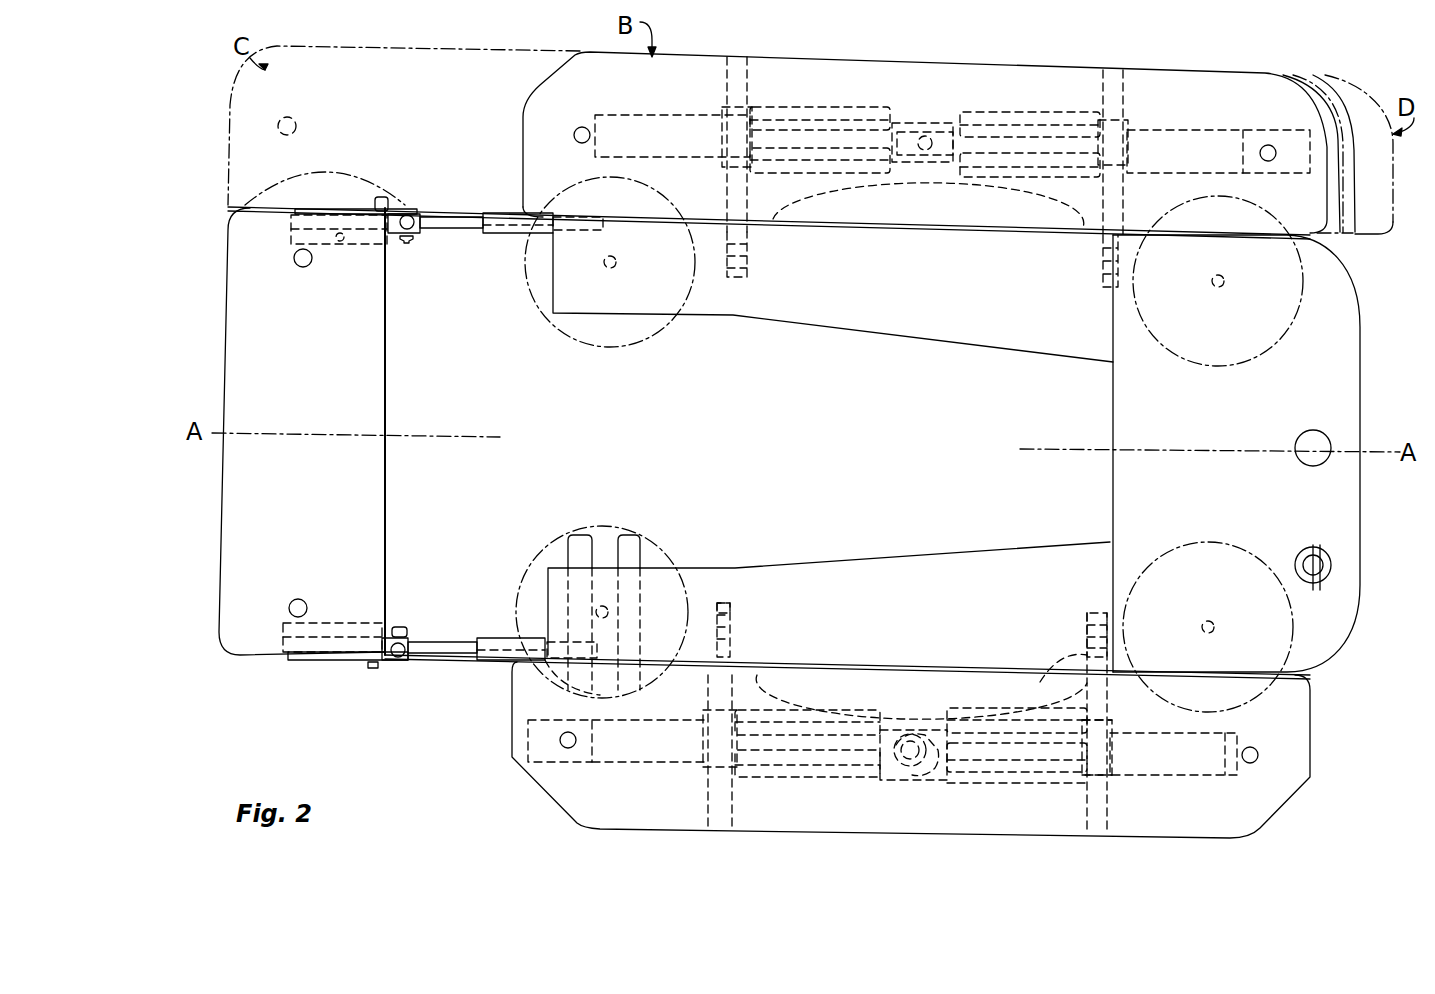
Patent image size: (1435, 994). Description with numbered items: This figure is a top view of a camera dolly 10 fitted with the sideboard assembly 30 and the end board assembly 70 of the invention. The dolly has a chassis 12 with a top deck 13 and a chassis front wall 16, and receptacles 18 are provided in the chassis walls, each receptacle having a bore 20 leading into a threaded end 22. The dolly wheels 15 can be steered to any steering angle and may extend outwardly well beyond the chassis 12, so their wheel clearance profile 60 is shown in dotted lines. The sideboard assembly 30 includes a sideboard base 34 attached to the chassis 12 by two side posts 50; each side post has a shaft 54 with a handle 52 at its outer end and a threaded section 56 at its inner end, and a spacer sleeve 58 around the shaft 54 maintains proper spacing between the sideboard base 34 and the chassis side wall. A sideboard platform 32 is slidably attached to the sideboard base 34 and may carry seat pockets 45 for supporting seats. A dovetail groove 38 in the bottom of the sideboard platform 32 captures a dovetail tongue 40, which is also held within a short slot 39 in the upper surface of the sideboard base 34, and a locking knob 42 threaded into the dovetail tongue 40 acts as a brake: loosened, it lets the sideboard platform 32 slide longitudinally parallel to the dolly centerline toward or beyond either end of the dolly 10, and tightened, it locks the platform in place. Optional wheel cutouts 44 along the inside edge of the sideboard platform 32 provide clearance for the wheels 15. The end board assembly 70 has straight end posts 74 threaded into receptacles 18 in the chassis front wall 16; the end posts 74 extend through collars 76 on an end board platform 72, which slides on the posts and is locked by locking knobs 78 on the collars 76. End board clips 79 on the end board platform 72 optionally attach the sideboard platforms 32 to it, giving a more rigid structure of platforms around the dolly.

The camera dolly 10 is at (1330, 650).
The chassis 12 is at (895, 325).
The top deck 13 is at (930, 281).
The wheels 15 is at (628, 535).
The chassis front wall 16 is at (555, 300).
The receptacles 18 is at (748, 248).
The bore 20 is at (760, 652).
The threaded end 22 is at (716, 600).
The sideboard assembly 30 is at (494, 731).
The sideboard platform 32 is at (560, 790).
The sideboard base 34 is at (772, 778).
The dovetail groove 38 is at (685, 765).
The short slot 39 is at (925, 782).
The dovetail tongue 40 is at (915, 782).
The locking knob 42 is at (910, 720).
The wheel cutouts 44 is at (805, 668).
The seat pockets 45 is at (1257, 750).
The side posts 50 is at (1125, 138).
The handle 52 is at (1082, 832).
The shaft 54 is at (1060, 675).
The threaded section 56 is at (1088, 644).
The spacer sleeve 58 is at (712, 690).
The wheel clearance profile 60 is at (535, 285).
The end board assembly 70 is at (388, 428).
The end board platform 72 is at (356, 365).
The end posts 74 is at (452, 217).
The collars 76 is at (305, 205).
The locking knobs 78 is at (412, 244).
The end board clips 79 is at (382, 197).